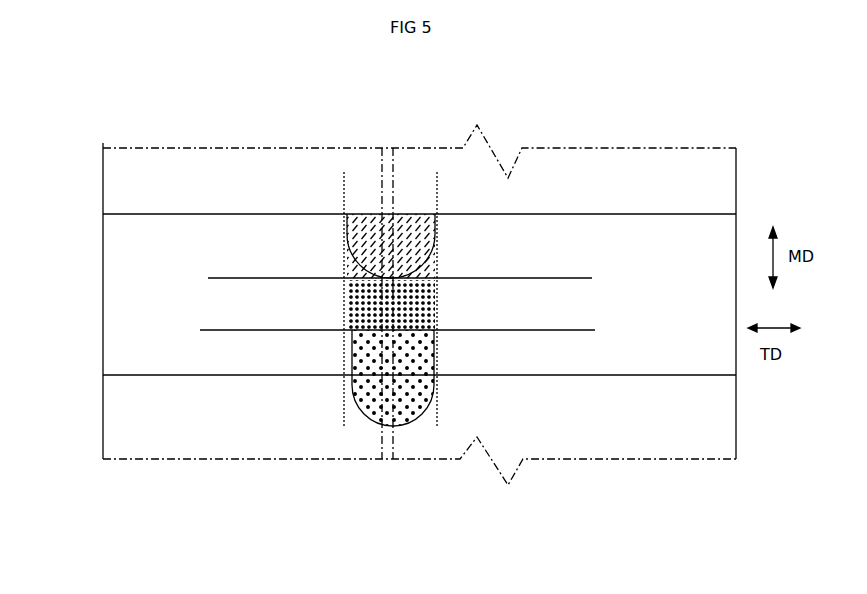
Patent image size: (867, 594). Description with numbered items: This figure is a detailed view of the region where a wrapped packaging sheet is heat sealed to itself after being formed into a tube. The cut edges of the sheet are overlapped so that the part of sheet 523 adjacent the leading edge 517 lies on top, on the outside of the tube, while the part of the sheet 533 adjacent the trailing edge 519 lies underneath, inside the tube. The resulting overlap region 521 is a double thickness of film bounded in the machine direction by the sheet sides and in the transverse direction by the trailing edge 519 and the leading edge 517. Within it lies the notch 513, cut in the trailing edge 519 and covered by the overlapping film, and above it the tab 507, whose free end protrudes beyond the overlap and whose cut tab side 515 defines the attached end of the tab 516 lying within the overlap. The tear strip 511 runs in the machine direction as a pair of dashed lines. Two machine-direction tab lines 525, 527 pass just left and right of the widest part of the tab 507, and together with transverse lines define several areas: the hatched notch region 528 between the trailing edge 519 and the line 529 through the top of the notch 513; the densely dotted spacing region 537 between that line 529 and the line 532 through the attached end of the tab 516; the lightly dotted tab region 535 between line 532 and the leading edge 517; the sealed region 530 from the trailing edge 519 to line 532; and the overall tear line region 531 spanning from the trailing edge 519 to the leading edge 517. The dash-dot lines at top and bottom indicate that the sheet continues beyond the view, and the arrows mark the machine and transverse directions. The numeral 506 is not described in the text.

The cup-shaped zone outline 506 is at (405, 425).
The tab 507 is at (408, 395).
The tear strip 511 is at (388, 258).
The notch 513 is at (357, 262).
The cut tab side 515 is at (405, 332).
The attached end of the tab 516 is at (365, 340).
The leading edge 517 is at (684, 375).
The trailing edge 519 is at (140, 217).
The overlap region 521 is at (213, 255).
The part of sheet adjacent the leading edge 523 is at (293, 190).
The left MD tab line 525 is at (344, 197).
The right MD tab line 527 is at (437, 413).
The notch region 528 is at (365, 222).
The line passing through the top end of the notch 529 is at (260, 277).
The sealed region 530 is at (347, 278).
The tear line region 531 is at (360, 300).
The line passing through the attached end of the tab 532 is at (282, 330).
The part of the sheet adjacent the trailing edge 533 is at (282, 412).
The tab region 535 is at (353, 340).
The spacing region 537 is at (417, 298).